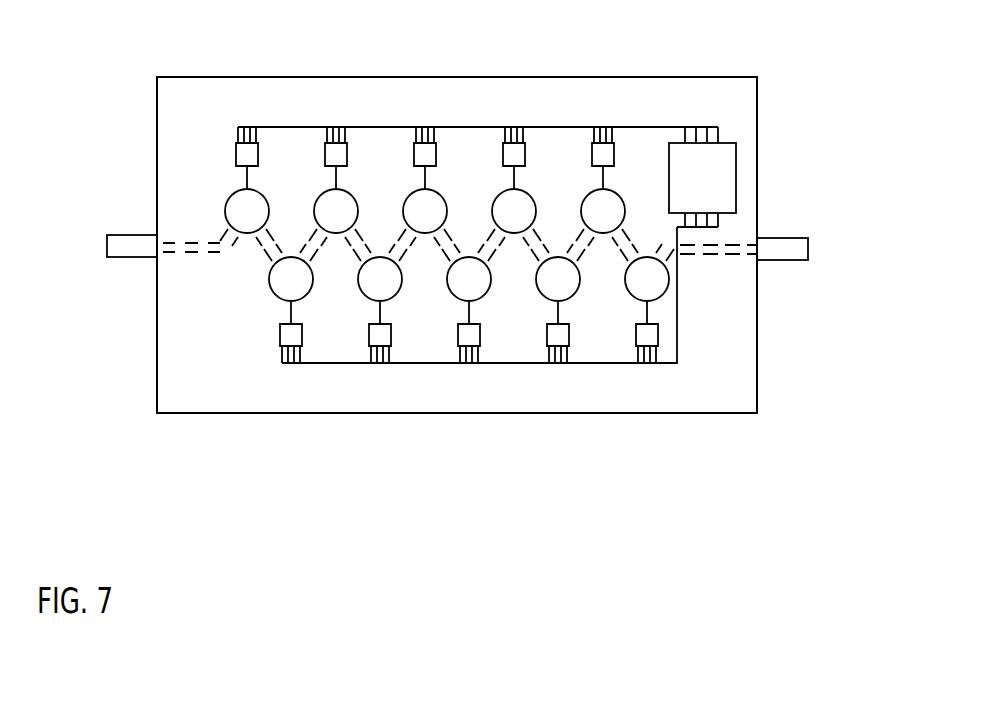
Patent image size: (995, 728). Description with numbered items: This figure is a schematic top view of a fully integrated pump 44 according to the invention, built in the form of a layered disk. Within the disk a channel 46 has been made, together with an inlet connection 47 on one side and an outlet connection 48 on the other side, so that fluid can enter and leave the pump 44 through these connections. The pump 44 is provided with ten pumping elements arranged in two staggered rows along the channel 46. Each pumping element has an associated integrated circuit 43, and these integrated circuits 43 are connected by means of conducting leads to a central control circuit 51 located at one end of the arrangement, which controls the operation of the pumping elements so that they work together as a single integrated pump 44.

The integrated circuits 43 is at (247, 157).
The fully integrated pump 44 is at (225, 355).
The channel 46 is at (352, 257).
The inlet connection 47 is at (113, 267).
The outlet connection 48 is at (813, 272).
The central control circuit 51 is at (705, 170).